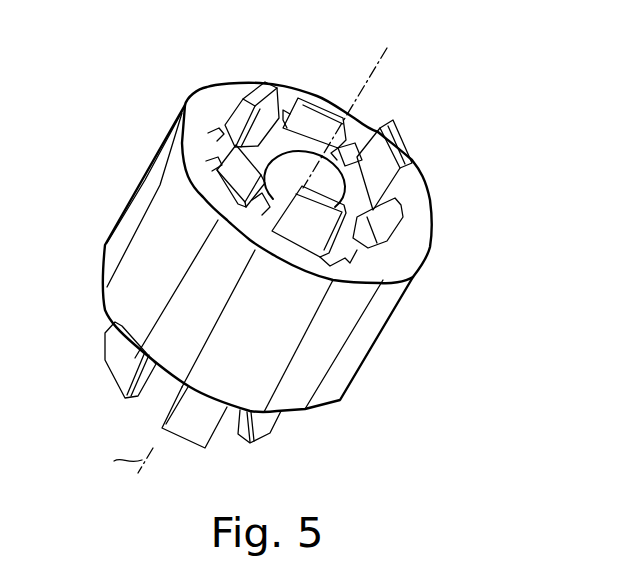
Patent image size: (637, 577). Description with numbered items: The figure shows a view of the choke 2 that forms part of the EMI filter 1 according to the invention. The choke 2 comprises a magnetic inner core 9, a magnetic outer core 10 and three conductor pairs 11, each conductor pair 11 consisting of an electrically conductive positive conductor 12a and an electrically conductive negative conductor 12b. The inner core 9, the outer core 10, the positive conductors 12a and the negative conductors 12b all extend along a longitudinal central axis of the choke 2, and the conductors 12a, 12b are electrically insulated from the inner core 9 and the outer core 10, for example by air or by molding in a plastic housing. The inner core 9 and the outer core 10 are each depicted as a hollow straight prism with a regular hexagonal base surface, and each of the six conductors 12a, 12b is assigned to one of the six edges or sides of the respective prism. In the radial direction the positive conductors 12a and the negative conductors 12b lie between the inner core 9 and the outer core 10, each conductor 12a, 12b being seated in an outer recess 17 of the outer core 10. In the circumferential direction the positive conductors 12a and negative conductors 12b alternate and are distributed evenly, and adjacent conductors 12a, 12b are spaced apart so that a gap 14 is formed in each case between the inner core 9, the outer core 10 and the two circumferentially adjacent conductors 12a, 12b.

The EMI filter 1 is at (308, 260).
The choke 2 is at (308, 260).
The inner core 9 is at (362, 176).
The outer core 10 is at (382, 309).
The conductor pairs 11 is at (279, 260).
The positive conductor 12a is at (217, 132).
The negative conductor 12b is at (328, 112).
The gap 14 is at (270, 224).
The outer recess 17 is at (234, 112).